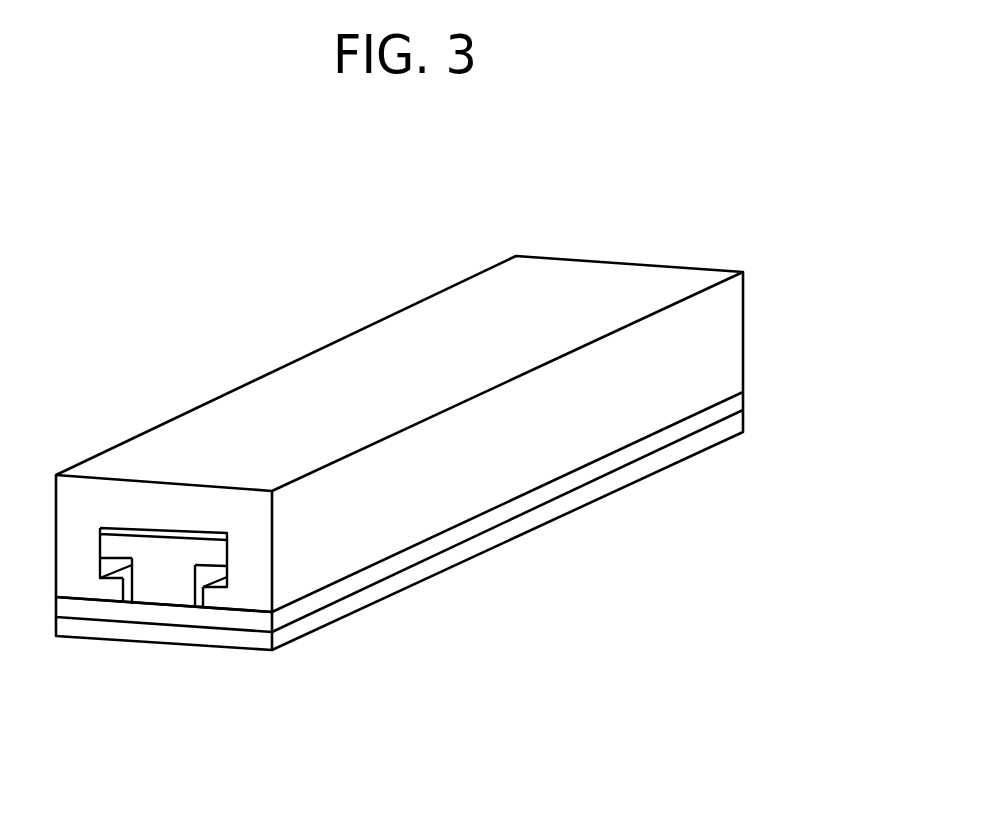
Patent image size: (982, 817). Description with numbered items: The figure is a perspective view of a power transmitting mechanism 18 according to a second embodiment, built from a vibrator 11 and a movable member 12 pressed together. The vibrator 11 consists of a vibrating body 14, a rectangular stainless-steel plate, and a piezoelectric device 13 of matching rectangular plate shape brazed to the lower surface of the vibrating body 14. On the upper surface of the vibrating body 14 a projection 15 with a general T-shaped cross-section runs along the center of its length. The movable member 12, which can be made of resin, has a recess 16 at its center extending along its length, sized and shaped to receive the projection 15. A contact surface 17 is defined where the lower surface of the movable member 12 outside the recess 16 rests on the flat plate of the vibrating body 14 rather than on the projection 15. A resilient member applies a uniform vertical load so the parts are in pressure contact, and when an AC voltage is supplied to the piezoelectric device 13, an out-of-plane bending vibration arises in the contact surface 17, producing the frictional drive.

The vibrator 11 is at (468, 510).
The movable member 12 is at (735, 302).
The piezoelectric device 13 is at (434, 529).
The vibrating body 14 is at (732, 407).
The projection 15 is at (158, 565).
The recess 16 is at (166, 518).
The contact surface 17 is at (98, 612).
The power transmitting mechanism 18 is at (243, 363).